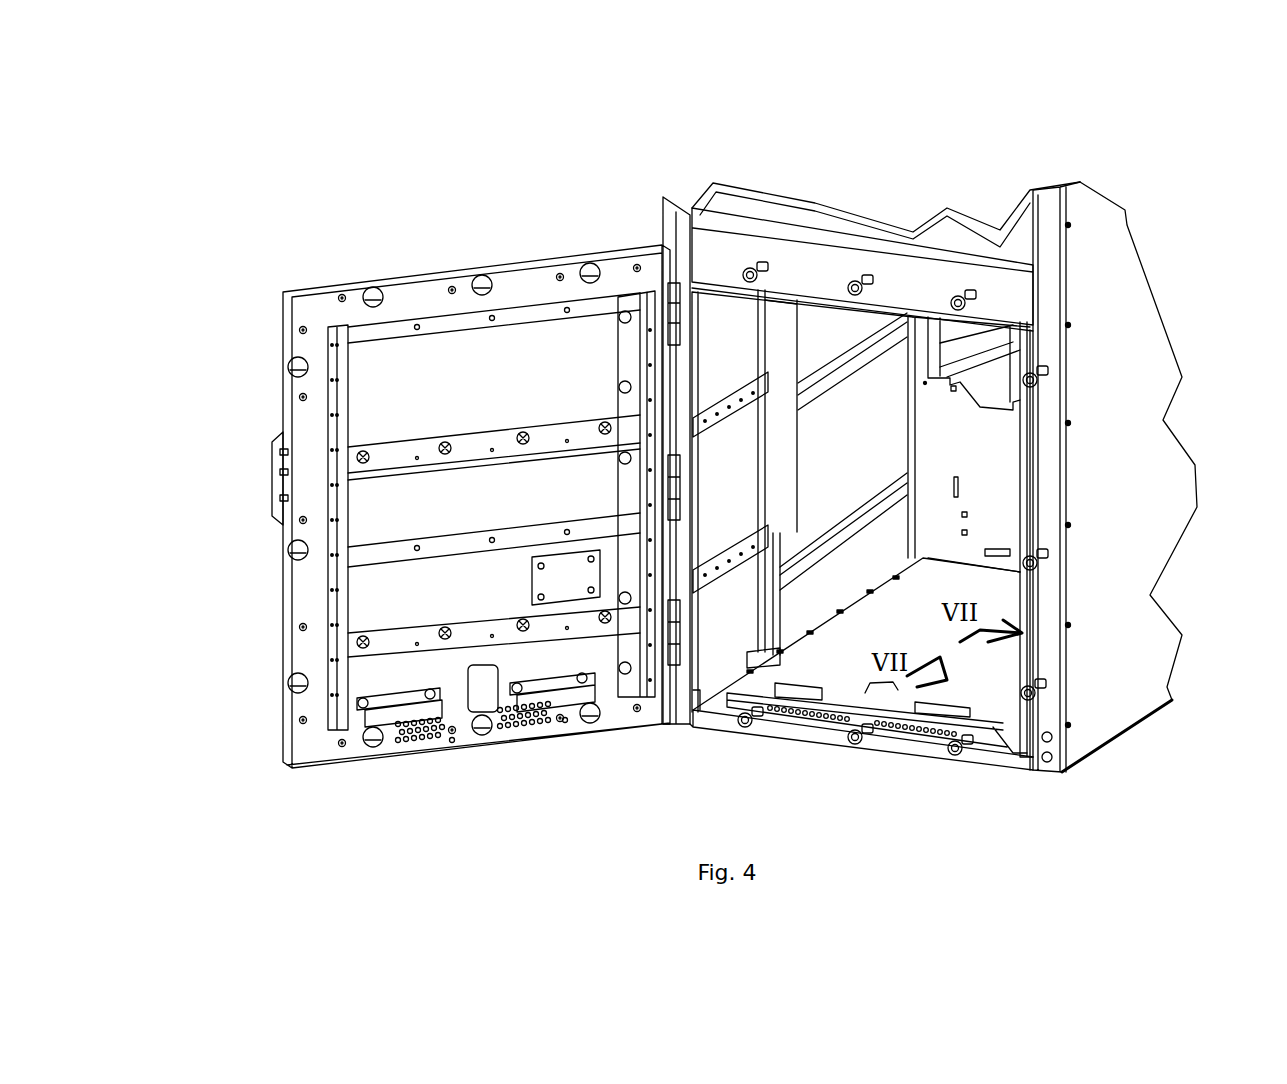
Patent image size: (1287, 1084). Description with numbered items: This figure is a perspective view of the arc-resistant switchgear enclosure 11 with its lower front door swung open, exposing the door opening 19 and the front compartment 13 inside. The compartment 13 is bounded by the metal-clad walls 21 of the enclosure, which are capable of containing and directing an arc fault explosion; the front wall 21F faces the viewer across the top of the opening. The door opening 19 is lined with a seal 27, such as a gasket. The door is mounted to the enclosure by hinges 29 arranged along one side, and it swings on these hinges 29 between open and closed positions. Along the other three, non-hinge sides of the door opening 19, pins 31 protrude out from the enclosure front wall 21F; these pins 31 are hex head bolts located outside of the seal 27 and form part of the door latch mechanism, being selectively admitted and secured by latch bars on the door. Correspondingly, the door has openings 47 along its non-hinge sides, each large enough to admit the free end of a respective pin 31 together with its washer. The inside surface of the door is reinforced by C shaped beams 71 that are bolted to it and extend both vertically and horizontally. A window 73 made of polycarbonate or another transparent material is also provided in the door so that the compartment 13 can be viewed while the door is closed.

The arc-resistant switchgear enclosure 11 is at (636, 199).
The front compartment 13 is at (987, 498).
The door opening 19 is at (1019, 434).
The walls 21 is at (735, 340).
The front wall 21F is at (717, 248).
The seal 27 is at (1040, 638).
The hinges 29 is at (668, 318).
The pins 31 is at (961, 287).
The openings 47 is at (292, 355).
The C shaped beams 71 is at (402, 628).
The window 73 is at (565, 585).